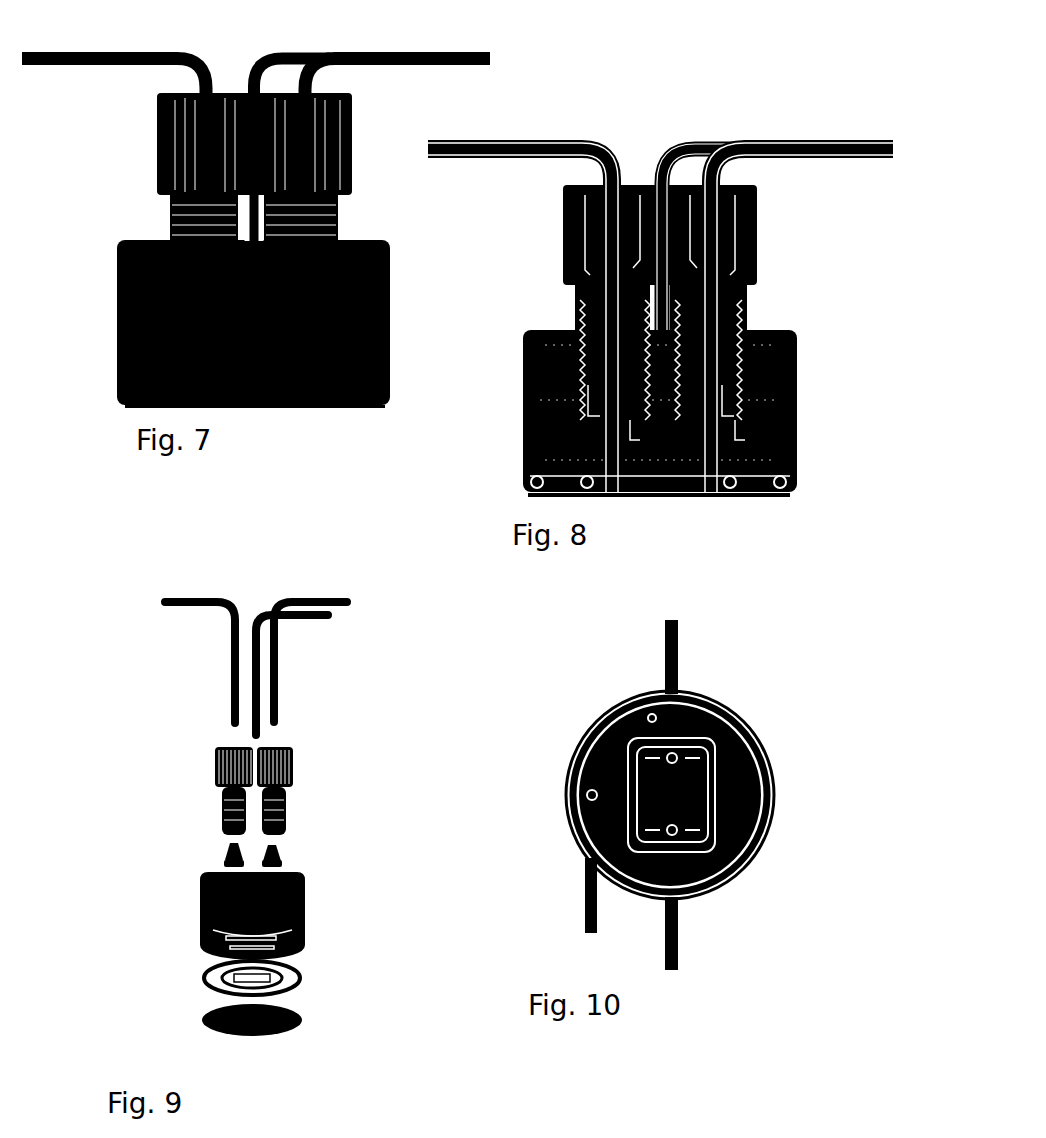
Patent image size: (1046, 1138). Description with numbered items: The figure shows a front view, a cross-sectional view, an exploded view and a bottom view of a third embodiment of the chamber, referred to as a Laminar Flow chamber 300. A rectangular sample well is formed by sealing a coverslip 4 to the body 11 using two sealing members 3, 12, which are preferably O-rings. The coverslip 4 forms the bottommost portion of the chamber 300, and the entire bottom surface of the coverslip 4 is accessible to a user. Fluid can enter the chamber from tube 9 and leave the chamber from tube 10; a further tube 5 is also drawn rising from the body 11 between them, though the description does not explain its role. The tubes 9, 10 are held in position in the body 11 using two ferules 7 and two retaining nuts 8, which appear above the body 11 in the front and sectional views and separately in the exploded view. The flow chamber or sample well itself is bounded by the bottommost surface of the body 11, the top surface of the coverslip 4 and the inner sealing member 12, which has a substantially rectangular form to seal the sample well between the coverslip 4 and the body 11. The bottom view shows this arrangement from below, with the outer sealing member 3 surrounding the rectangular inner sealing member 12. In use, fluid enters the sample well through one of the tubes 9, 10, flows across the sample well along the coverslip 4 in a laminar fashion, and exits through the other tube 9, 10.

In FIG. 8, the sealing member 3 is at (795, 478).
In FIG. 9, the sealing member 3 is at (305, 978).
In FIG. 10, the sealing member 3 is at (740, 716).
In FIG. 7, the coverslip 4 is at (345, 408).
In FIG. 8, the coverslip 4 is at (752, 498).
In FIG. 9, the coverslip 4 is at (200, 1020).
In FIG. 7, the capillary tube 5 is at (288, 57).
In FIG. 8, the capillary tube 5 is at (680, 152).
In FIG. 9, the capillary tube 5 is at (262, 693).
In FIG. 10, the capillary tube 5 is at (600, 912).
In FIG. 8, the ferule 7 is at (675, 423).
In FIG. 9, the ferule 7 is at (248, 850).
In FIG. 7, the retaining nut 8 is at (157, 140).
In FIG. 8, the retaining nut 8 is at (563, 258).
In FIG. 9, the retaining nut 8 is at (258, 770).
In FIG. 7, the tube 9 is at (75, 50).
In FIG. 8, the tube 9 is at (525, 142).
In FIG. 9, the tube 9 is at (222, 660).
In FIG. 10, the tube 9 is at (680, 650).
In FIG. 7, the tube 10 is at (440, 52).
In FIG. 8, the tube 10 is at (818, 140).
In FIG. 9, the tube 10 is at (282, 652).
In FIG. 10, the tube 10 is at (680, 922).
In FIG. 7, the body 11 is at (117, 304).
In FIG. 8, the body 11 is at (660, 411).
In FIG. 9, the body 11 is at (195, 910).
In FIG. 8, the inner sealing member 12 is at (730, 490).
In FIG. 9, the inner sealing member 12 is at (205, 978).
In FIG. 10, the inner sealing member 12 is at (718, 786).
In FIG. 7, the Laminar Flow chamber 300 is at (106, 355).
In FIG. 8, the Laminar Flow chamber 300 is at (813, 375).
In FIG. 9, the Laminar Flow chamber 300 is at (357, 902).